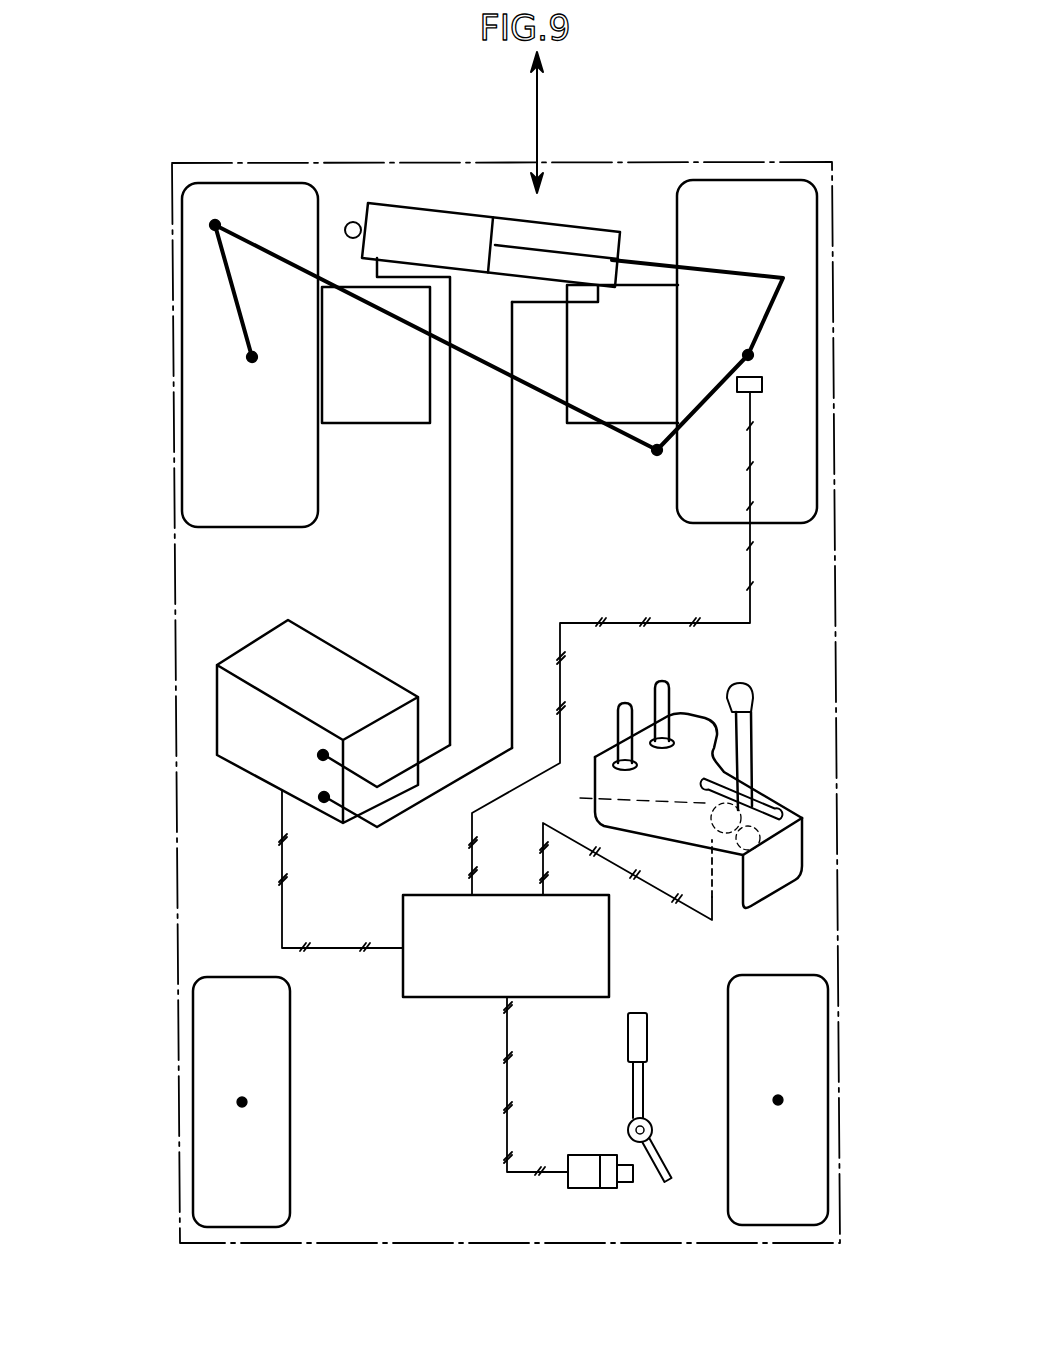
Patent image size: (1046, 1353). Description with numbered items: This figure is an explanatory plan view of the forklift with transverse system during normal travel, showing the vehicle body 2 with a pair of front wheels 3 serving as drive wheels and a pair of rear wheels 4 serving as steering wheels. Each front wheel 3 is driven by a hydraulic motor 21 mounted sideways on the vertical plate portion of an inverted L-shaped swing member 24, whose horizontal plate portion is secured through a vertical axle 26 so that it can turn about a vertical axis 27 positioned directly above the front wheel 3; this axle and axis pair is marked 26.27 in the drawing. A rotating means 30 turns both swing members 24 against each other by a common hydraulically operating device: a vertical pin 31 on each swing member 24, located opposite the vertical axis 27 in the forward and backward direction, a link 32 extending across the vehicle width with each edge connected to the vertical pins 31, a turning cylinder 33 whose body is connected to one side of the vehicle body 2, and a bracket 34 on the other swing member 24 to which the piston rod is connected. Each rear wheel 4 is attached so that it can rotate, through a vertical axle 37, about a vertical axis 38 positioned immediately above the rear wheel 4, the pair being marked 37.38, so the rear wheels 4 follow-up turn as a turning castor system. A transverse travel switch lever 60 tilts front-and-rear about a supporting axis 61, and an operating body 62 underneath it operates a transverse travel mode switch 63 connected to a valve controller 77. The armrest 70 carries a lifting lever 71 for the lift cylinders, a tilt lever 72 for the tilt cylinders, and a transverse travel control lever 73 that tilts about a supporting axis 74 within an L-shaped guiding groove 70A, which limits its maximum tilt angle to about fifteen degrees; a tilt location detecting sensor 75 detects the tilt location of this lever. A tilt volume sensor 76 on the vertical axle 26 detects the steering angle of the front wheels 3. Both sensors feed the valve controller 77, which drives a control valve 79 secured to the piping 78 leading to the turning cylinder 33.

The vehicle body 2 is at (172, 582).
The front wheel 3 is at (223, 475).
The rear wheel 4 is at (223, 1150).
The hydraulic motor 21 is at (345, 398).
The swing member 24 is at (233, 292).
The vertical axle and vertical axis 26.27 is at (495, 349).
The vertical axle 26 is at (495, 349).
The vertical axis 27 is at (252, 357).
The rotating means 30 is at (643, 224).
The vertical pin 31 is at (215, 224).
The link 32 is at (475, 367).
The turning cylinder 33 is at (467, 205).
The bracket 34 is at (772, 307).
The vertical axle and vertical axis 37.38 is at (593, 1089).
The vertical axle 37 is at (593, 1089).
The vertical axis 38 is at (247, 1102).
The transverse travel switch lever 60 is at (668, 1097).
The supporting axis 61 is at (650, 1125).
The operating body 62 is at (668, 1180).
The transverse travel mode switch 63 is at (590, 1160).
The armrest 70 is at (725, 796).
The guiding groove 70A is at (780, 800).
The lifting lever 71 is at (622, 717).
The tilt lever 72 is at (652, 728).
The transverse travel control lever 73 is at (757, 700).
The supporting axis 74 is at (758, 860).
The tilt location detecting sensor 75 is at (617, 804).
The tilt volume sensor 76 is at (762, 386).
The valve controller 77 is at (463, 983).
The piping 78 is at (450, 560).
The control valve 79 is at (347, 693).